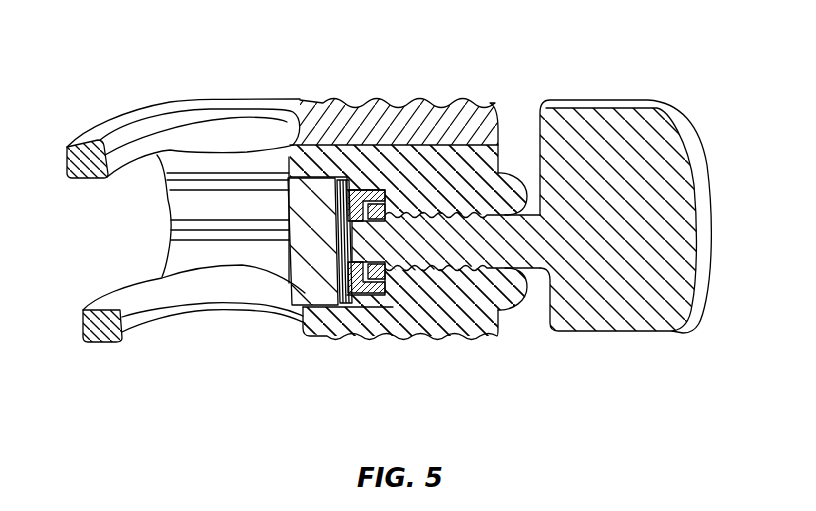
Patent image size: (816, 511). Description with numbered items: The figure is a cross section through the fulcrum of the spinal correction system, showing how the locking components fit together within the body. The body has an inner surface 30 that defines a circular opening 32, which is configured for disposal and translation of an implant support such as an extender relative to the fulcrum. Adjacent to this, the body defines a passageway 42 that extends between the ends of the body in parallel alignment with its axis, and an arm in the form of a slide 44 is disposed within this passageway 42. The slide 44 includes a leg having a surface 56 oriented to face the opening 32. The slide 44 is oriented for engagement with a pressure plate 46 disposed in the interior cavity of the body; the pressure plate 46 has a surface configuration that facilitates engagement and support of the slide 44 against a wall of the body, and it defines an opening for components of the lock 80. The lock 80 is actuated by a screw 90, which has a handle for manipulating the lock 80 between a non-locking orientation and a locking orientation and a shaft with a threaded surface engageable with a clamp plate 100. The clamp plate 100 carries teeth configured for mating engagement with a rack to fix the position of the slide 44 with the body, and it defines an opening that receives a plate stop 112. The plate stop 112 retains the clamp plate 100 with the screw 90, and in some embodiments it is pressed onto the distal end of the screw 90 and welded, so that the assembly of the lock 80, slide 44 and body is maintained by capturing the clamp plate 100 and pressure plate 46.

The inner surface 30 is at (213, 130).
The opening 32 is at (233, 130).
The passageway 42 is at (330, 170).
The slide 44 is at (377, 190).
The pressure plate 46 is at (377, 315).
The surface 56 is at (335, 227).
The lock 80 is at (536, 77).
The screw 90 is at (687, 192).
The clamp plate 100 is at (383, 180).
The plate stop 112 is at (390, 325).